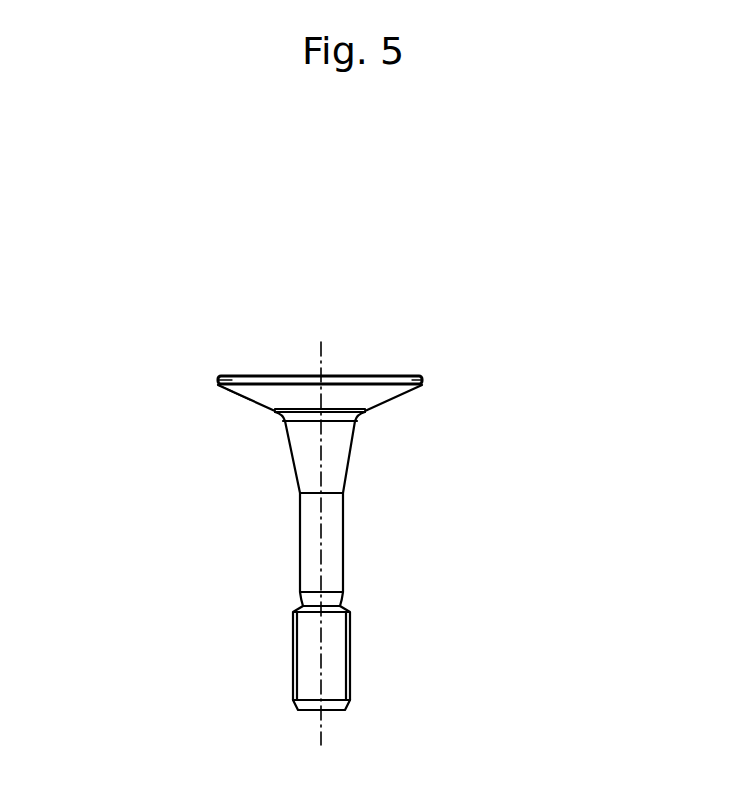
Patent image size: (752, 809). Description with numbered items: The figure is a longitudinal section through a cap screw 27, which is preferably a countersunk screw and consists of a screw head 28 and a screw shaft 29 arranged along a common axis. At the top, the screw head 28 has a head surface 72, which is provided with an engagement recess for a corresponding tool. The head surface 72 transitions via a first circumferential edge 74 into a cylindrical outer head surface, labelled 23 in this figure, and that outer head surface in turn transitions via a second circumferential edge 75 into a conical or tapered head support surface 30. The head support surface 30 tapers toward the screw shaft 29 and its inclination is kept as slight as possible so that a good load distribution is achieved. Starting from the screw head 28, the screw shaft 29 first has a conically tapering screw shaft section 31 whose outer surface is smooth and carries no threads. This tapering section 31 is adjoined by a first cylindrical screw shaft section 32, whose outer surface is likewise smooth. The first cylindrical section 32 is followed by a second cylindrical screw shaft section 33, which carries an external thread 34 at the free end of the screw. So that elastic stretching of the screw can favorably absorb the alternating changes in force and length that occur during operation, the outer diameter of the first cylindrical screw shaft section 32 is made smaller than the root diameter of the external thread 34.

The cap screw 27 is at (170, 155).
The head surface 72 is at (360, 373).
The first circumferential edge 74 is at (220, 380).
The second circumferential edge 75 is at (218, 385).
The valve disc 23 is at (427, 378).
The screw head 28 is at (382, 393).
The head support surface 30 is at (242, 397).
The conically tapering screw shaft section 31 is at (340, 450).
The first cylindrical screw shaft section 32 is at (328, 520).
The screw shaft 29 is at (330, 559).
The second cylindrical screw shaft section 33 is at (334, 646).
The external thread 34 is at (353, 672).